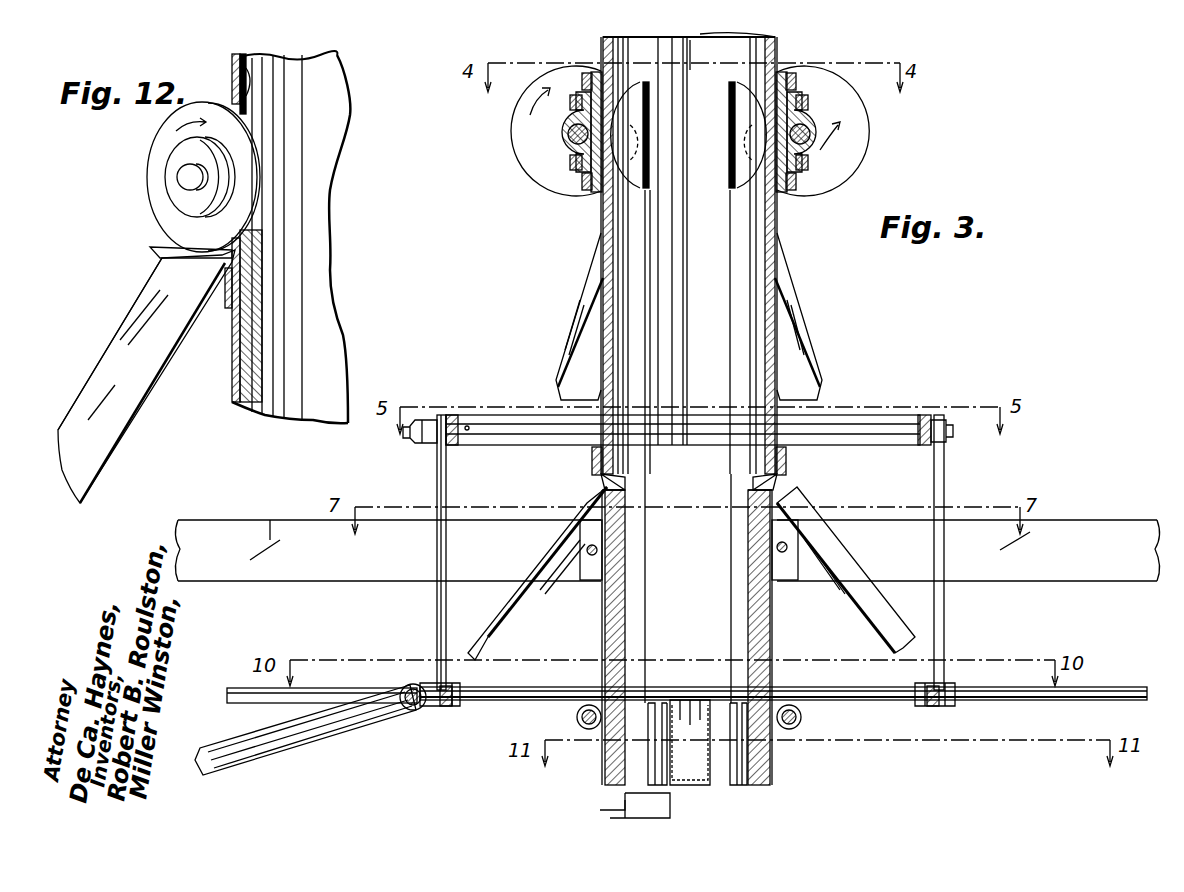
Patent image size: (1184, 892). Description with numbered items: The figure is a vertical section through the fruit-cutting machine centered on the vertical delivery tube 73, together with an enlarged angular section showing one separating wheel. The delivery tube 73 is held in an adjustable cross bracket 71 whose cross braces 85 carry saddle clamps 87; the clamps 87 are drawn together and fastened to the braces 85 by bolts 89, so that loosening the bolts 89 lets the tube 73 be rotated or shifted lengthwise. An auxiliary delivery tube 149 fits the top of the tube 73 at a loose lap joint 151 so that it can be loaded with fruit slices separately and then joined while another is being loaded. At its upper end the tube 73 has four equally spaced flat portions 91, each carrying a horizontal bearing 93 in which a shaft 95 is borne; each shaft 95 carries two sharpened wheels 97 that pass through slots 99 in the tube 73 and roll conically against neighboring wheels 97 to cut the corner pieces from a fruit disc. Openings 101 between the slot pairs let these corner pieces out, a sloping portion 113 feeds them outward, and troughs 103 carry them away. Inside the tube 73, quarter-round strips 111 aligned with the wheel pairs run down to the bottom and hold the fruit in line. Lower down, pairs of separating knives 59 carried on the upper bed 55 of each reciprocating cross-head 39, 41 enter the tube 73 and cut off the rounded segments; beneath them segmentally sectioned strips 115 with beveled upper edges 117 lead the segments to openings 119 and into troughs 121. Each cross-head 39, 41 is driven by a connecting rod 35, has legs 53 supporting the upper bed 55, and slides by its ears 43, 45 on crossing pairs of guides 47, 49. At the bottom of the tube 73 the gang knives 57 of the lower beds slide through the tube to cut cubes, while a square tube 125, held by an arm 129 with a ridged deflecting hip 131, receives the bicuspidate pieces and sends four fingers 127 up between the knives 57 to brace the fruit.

In FIG. 3, the connecting rod 35 is at (283, 742).
In FIG. 3, the cross-head 39 is at (436, 620).
In FIG. 3, the cross-head 41 is at (590, 456).
In FIG. 3, the ears 43 is at (455, 705).
In FIG. 3, the ears 45 is at (575, 695).
In FIG. 3, the guides 47 is at (232, 690).
In FIG. 3, the guides 49 is at (588, 729).
In FIG. 3, the supporting legs 53 is at (437, 487).
In FIG. 3, the upper bed 55 is at (510, 414).
In FIG. 3, the gang knives 57 is at (660, 700).
In FIG. 3, the separating knives 59 is at (885, 430).
In FIG. 3, the cross bracket 71 is at (264, 514).
In FIG. 12, the delivery tube 73 is at (330, 96).
In FIG. 3, the delivery tube 73 is at (777, 232).
In FIG. 3, the cross braces 85 is at (192, 522).
In FIG. 3, the saddle clamps 87 is at (585, 524).
In FIG. 3, the bolts 89 is at (590, 554).
In FIG. 3, the flat portions 91 is at (586, 76).
In FIG. 3, the bearing 93 is at (565, 160).
In FIG. 12, the shaft 95 is at (185, 183).
In FIG. 3, the shaft 95 is at (568, 136).
In FIG. 12, the wheels 97 is at (150, 178).
In FIG. 3, the wheels 97 is at (522, 160).
In FIG. 12, the slot 99 is at (238, 72).
In FIG. 3, the slot 99 is at (648, 108).
In FIG. 12, the openings 101 is at (150, 248).
In FIG. 3, the openings 101 is at (748, 152).
In FIG. 12, the troughs 103 is at (135, 340).
In FIG. 3, the troughs 103 is at (578, 326).
In FIG. 12, the quarter-round strips 111 is at (265, 335).
In FIG. 3, the quarter-round strips 111 is at (750, 300).
In FIG. 12, the sloping portion 113 is at (262, 243).
In FIG. 3, the sloping portion 113 is at (600, 195).
In FIG. 3, the segmentally sectioned strips 115 is at (620, 585).
In FIG. 3, the beveled upper edges 117 is at (750, 485).
In FIG. 3, the openings 119 is at (600, 478).
In FIG. 3, the troughs 121 is at (497, 614).
In FIG. 3, the square tube 125 is at (698, 768).
In FIG. 3, the fingers 127 is at (688, 702).
In FIG. 3, the arm 129 is at (672, 808).
In FIG. 3, the ridged hip 131 is at (598, 803).
In FIG. 3, the auxiliary delivery tube 149 is at (776, 40).
In FIG. 3, the lap joint 151 is at (725, 50).